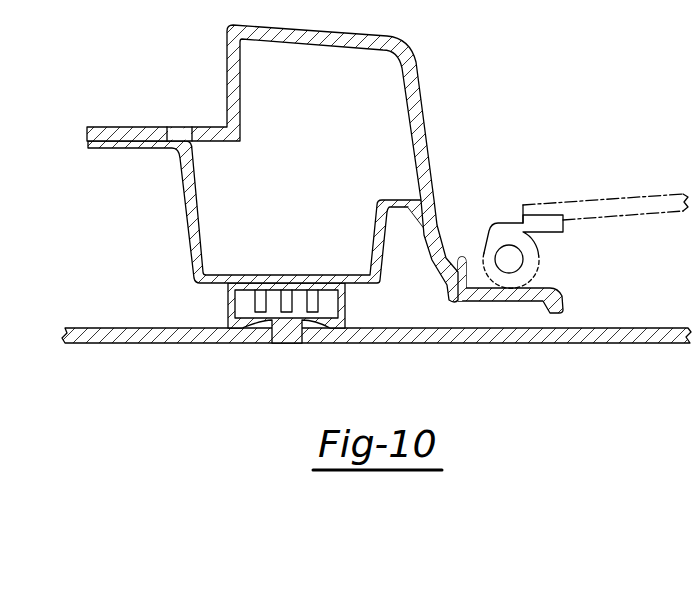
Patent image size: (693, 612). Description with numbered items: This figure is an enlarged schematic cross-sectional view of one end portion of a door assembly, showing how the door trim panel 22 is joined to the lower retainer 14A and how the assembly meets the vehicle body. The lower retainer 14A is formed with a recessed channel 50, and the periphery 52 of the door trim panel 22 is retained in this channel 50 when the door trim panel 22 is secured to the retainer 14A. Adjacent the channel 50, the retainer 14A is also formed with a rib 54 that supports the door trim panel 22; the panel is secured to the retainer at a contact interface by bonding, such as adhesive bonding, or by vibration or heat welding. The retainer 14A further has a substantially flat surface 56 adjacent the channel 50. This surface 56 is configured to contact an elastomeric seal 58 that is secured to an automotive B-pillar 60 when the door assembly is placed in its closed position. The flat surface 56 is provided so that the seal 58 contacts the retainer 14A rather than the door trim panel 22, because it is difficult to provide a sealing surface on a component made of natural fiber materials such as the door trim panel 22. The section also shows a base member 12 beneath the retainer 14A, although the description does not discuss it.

The floor panel 12 is at (215, 344).
The lower retainer 14A is at (265, 224).
The door trim panel 22 is at (423, 130).
The recessed channel 50 is at (453, 270).
The periphery 52 is at (478, 290).
The rib 54 is at (413, 222).
The substantially flat surface 56 is at (504, 290).
The elastomeric seal 58 is at (540, 256).
The automotive B-pillar 60 is at (622, 202).